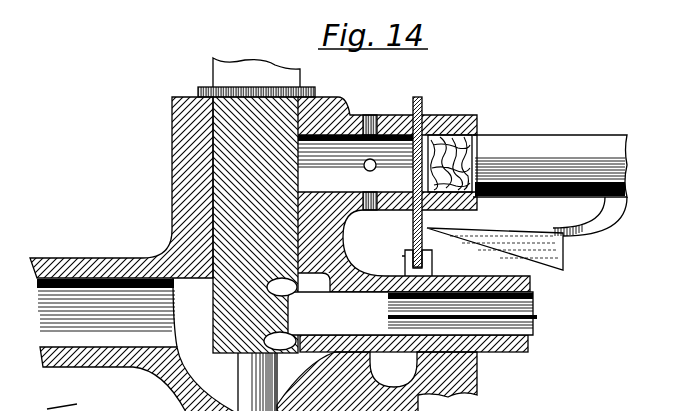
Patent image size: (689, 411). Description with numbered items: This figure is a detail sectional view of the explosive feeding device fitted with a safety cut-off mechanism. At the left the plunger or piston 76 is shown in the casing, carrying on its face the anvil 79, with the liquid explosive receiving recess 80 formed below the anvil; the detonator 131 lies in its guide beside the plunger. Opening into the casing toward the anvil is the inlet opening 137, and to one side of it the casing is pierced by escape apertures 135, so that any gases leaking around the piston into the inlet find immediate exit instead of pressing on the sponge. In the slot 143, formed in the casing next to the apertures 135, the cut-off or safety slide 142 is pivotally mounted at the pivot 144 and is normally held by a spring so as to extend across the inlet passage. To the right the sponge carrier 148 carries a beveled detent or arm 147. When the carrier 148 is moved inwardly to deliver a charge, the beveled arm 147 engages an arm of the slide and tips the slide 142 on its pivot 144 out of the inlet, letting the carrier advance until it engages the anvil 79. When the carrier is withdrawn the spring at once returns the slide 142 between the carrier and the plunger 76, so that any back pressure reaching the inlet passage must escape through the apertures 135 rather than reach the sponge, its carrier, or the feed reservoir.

The plunger 76 is at (218, 173).
The anvil 79 is at (288, 303).
The liquid explosive receiving recess 80 is at (280, 341).
The detonator 131 is at (412, 313).
The escape apertures 135 is at (372, 116).
The inlet opening 137 is at (355, 163).
The safety slide 142 is at (424, 98).
The slot 143 is at (438, 116).
The pivot 144 is at (432, 259).
The beveled detent arm 147 is at (527, 233).
The sponge carrier 148 is at (550, 153).